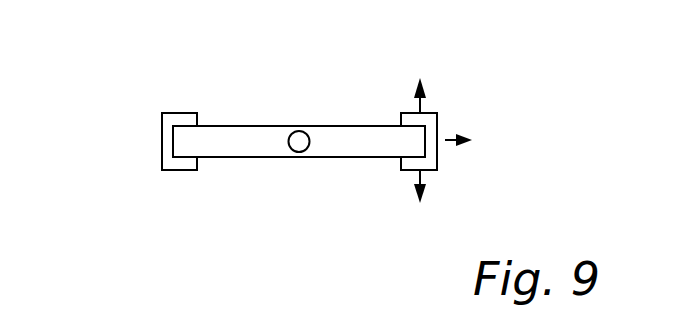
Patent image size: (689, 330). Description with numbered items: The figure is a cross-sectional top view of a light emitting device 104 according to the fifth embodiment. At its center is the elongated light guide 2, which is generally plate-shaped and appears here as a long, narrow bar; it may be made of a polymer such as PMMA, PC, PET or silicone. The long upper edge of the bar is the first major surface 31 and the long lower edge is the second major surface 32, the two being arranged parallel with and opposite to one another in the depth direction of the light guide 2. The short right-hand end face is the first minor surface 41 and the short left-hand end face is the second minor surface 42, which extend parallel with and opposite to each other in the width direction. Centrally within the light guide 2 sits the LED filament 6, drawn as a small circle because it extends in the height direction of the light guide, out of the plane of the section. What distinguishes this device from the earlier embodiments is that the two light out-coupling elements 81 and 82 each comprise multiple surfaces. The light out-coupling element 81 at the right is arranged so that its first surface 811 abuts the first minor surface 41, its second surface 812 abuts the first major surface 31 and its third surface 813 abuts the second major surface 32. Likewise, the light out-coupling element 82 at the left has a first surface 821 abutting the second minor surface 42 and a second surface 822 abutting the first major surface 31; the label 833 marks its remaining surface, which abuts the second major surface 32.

The light emitting device 104 is at (115, 70).
The elongated light guide 2 is at (369, 72).
The first major surface 31 is at (238, 126).
The second major surface 32 is at (362, 158).
The first minor surface 41 is at (422, 146).
The second minor surface 42 is at (175, 140).
The LED filament 6 is at (302, 145).
The light out-coupling element 82 is at (162, 137).
The first surface 821 is at (162, 158).
The second surface 822 is at (180, 113).
The first bracket base 833 is at (185, 172).
The light out-coupling element 81 is at (438, 127).
The first surface 811 is at (438, 155).
The second surface 812 is at (428, 112).
The third surface 813 is at (428, 172).